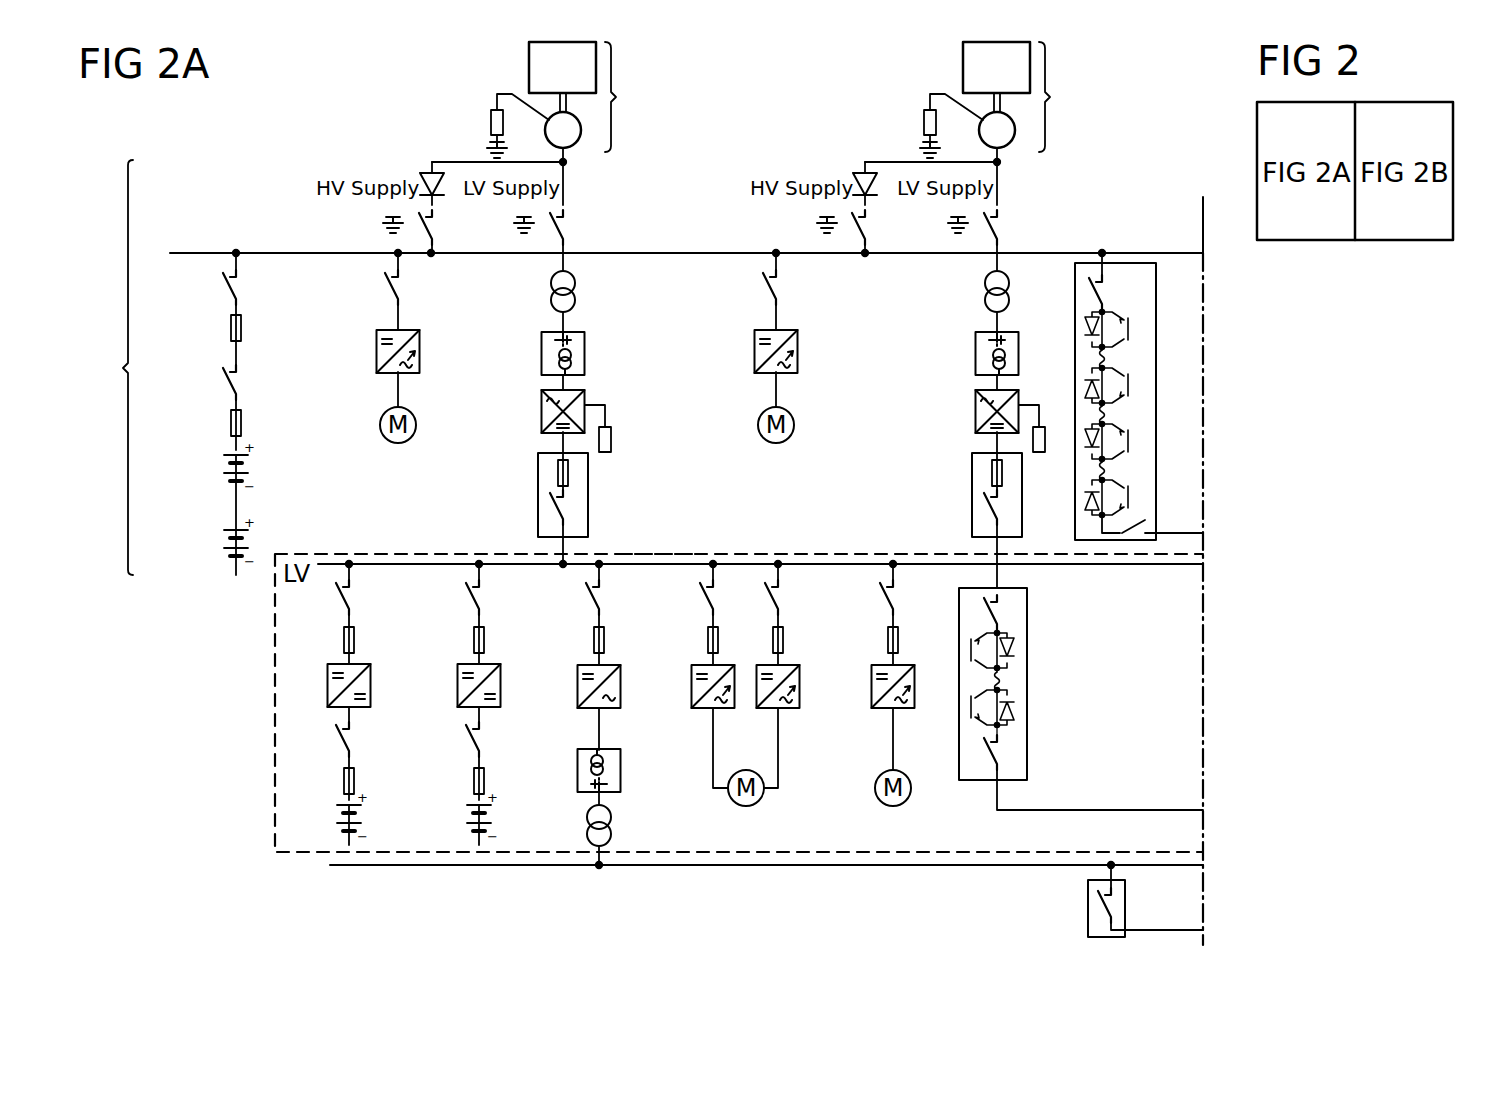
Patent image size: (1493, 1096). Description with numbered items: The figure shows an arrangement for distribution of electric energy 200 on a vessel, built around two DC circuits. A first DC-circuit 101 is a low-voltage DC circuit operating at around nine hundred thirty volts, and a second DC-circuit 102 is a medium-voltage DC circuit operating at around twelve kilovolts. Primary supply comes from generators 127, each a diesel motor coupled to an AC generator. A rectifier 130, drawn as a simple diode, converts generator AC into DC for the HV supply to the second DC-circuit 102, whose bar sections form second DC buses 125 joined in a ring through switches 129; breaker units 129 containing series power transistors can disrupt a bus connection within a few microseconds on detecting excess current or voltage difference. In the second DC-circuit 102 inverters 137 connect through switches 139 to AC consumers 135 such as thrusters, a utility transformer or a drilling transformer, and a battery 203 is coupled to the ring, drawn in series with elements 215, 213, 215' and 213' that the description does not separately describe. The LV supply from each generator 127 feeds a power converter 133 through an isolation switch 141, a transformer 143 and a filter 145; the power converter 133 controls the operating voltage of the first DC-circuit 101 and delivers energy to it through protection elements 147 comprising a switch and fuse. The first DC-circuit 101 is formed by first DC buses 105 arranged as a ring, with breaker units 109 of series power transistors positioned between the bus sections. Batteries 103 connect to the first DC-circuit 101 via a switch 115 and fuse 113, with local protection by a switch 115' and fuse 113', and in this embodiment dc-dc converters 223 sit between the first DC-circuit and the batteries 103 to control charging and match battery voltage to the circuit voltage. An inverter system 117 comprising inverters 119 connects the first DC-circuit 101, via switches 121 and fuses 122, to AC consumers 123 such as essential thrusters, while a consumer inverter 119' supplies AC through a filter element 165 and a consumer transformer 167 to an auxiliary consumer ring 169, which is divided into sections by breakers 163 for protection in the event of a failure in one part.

The arrangement for distribution of electric energy 200 is at (1132, 110).
The generator 127 is at (790, 100).
The rectifier 130 is at (427, 174).
The breaker unit 129 is at (436, 222).
The isolation switch 141 is at (569, 224).
The second DC bus 125 is at (680, 252).
The switch 139 is at (384, 288).
The transformer 143 is at (550, 290).
The filter 145 is at (541, 353).
The power converter 133 is at (541, 410).
The inverter 137 is at (376, 353).
The AC consumer 135 is at (380, 428).
The protection elements 147 is at (537, 496).
The first DC bus 105 is at (651, 552).
The second DC-circuit 102 is at (106, 367).
The switch 215 is at (194, 291).
The fuse 213 is at (197, 331).
The switch 215' is at (193, 382).
The fuse 213' is at (197, 422).
The battery 203 is at (222, 474).
The first DC-circuit 101 is at (274, 697).
The switch 115 is at (443, 596).
The fuse 113 is at (450, 639).
The dc-dc converter 223 is at (371, 686).
The switch 115' is at (407, 739).
The fuse 113' is at (414, 780).
The battery 103 is at (367, 833).
The switch 121 is at (701, 600).
The fuse 122 is at (708, 640).
The inverter system 117 is at (571, 662).
The consumer inverter 119' is at (638, 730).
The filter element 165 is at (577, 774).
The consumer transformer 167 is at (611, 828).
The inverter 119 is at (816, 717).
The AC consumer 123 is at (764, 790).
The breaker unit 109 is at (1027, 692).
The breaker 163 is at (1088, 912).
The auxiliary consumer ring 169 is at (824, 867).